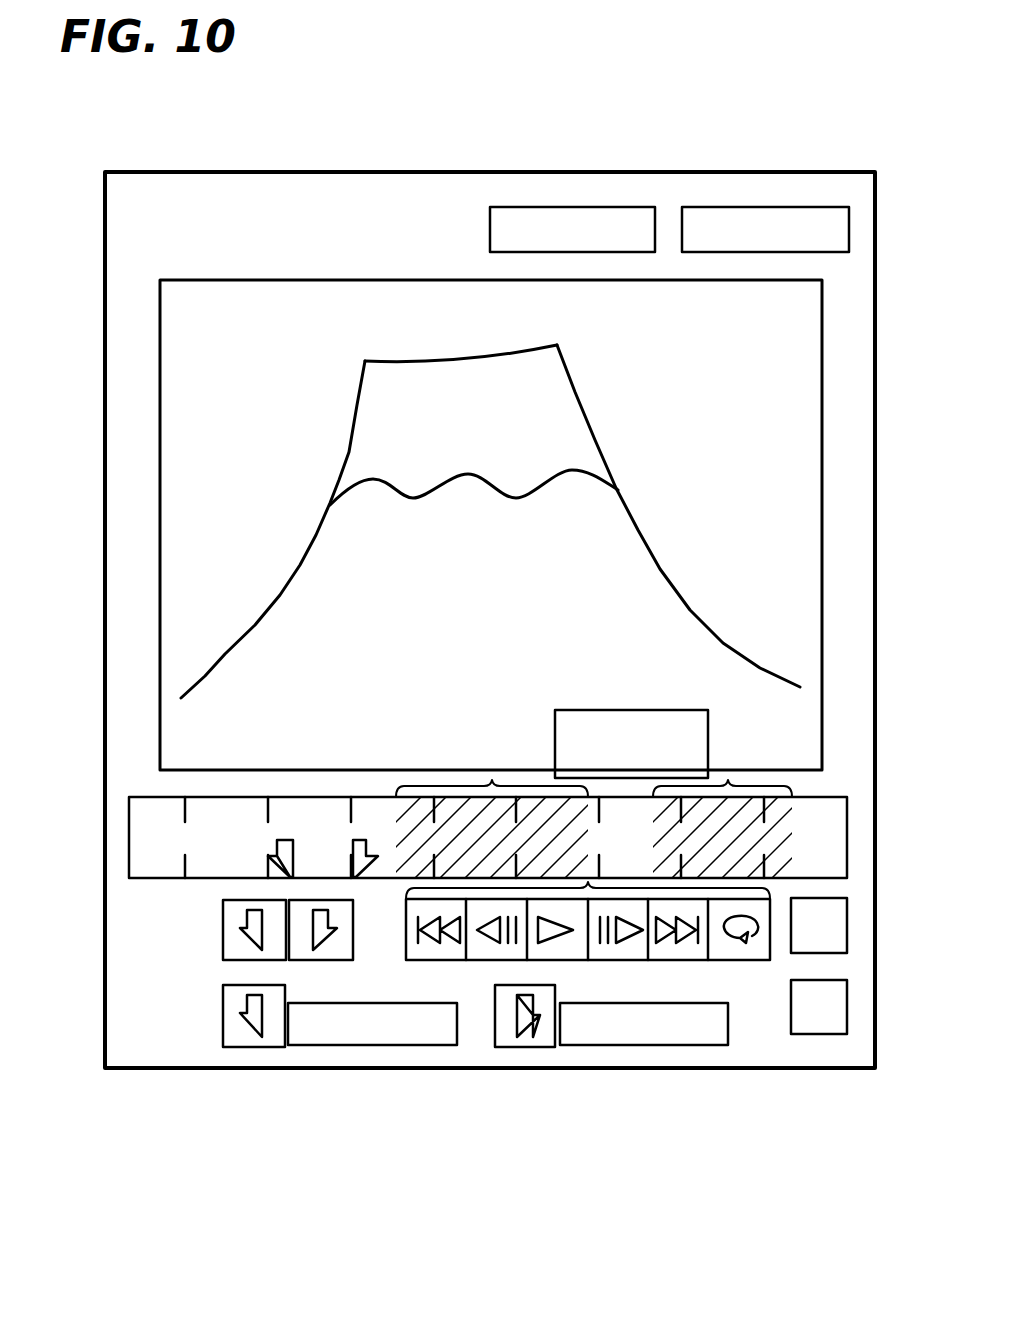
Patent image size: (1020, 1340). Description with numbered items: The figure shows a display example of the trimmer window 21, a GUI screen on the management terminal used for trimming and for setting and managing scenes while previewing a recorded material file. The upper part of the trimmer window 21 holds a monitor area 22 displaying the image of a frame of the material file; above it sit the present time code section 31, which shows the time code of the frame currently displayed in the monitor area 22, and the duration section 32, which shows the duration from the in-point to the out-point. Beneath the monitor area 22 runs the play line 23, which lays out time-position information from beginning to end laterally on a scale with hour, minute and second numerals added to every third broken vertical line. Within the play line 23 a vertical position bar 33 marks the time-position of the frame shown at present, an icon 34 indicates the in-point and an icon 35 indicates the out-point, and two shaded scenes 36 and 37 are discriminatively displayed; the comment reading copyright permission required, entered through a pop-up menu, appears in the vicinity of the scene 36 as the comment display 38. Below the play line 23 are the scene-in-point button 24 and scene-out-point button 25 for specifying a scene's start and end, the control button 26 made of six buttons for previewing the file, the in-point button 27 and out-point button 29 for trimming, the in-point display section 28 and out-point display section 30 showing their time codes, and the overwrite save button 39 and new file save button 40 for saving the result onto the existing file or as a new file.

The trimmer window 21 is at (151, 1197).
The monitor area 22 is at (213, 293).
The play line 23 is at (140, 838).
The scene-in-point button 24 is at (222, 928).
The scene-out-point button 25 is at (320, 961).
The control button 26 is at (588, 882).
The in-point button 27 is at (243, 1048).
The in-point display section 28 is at (300, 1046).
The out-point button 29 is at (540, 1048).
The out-point display section 30 is at (593, 1046).
The present time code section 31 is at (538, 207).
The duration section 32 is at (725, 207).
The position bar 33 is at (540, 828).
The icon indicating the in-point 34 is at (270, 878).
The icon indicating the out-point 35 is at (365, 880).
The scene 36 is at (490, 781).
The scene 37 is at (727, 781).
The copyright permission notice 38 is at (615, 708).
The overwrite save button 39 is at (800, 954).
The new file save button 40 is at (812, 1034).